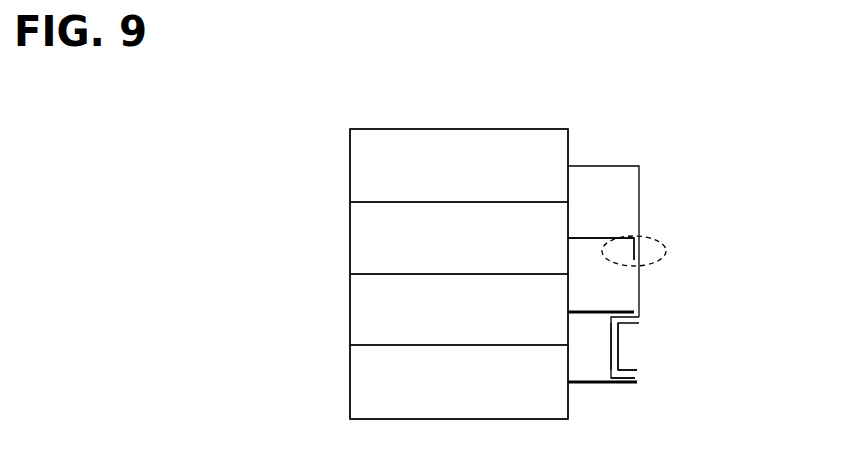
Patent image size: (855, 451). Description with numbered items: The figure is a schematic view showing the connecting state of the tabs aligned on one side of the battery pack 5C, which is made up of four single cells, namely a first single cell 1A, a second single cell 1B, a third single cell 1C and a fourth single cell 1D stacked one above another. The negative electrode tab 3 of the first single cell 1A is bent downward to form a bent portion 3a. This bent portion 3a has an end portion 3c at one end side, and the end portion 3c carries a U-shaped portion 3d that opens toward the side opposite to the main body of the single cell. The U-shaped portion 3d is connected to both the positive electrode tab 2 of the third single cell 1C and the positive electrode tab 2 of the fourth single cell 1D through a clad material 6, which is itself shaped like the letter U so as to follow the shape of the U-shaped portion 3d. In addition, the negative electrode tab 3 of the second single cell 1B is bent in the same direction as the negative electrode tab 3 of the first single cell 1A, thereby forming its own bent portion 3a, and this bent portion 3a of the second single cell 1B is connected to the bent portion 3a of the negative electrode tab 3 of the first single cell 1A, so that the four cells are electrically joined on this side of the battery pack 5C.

The battery pack 5C is at (306, 105).
The first single cell 1A is at (372, 170).
The second single cell 1B is at (372, 243).
The third single cell 1C is at (368, 318).
The fourth single cell 1D is at (372, 385).
The positive electrode tab 2 is at (592, 307).
The negative electrode tab 3 is at (607, 166).
The bent portion 3a is at (639, 210).
The end portion 3c is at (640, 318).
The U-shaped portion 3d is at (619, 345).
The clad material 6 is at (637, 376).